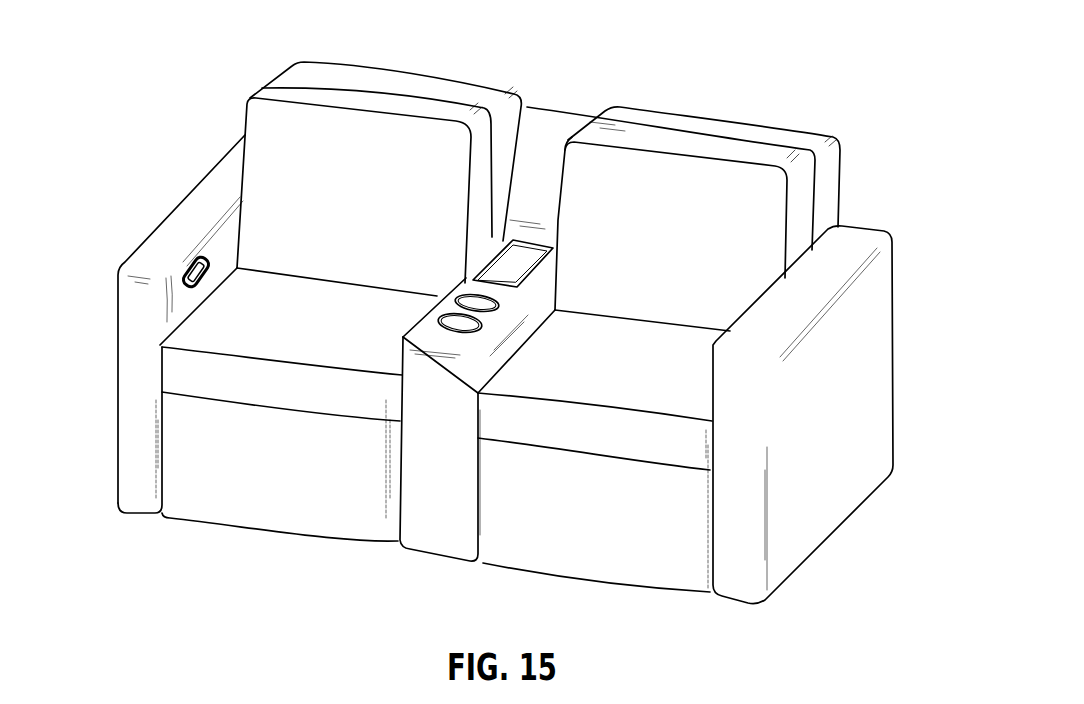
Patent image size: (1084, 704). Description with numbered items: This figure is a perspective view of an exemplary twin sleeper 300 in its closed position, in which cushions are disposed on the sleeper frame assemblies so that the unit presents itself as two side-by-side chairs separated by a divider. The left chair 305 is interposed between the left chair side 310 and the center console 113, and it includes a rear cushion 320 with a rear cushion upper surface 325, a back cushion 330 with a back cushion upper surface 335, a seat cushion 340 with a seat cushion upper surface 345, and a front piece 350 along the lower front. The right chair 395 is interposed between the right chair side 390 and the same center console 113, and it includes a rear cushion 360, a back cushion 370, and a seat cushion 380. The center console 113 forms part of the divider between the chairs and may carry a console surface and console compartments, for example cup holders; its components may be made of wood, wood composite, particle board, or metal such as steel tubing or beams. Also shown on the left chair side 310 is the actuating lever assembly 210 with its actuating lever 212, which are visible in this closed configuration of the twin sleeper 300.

The seating arrangement 300 is at (672, 36).
The left chair 305 is at (457, 67).
The right chair 395 is at (717, 110).
The left chair side 310 is at (203, 173).
The rear cushion 320 is at (297, 63).
The rear cushion upper surface 325 is at (417, 75).
The back cushion 330 is at (257, 84).
The back cushion upper surface 335 is at (280, 132).
The seat cushion 340 is at (178, 377).
The seat cushion upper surface 345 is at (230, 327).
The front piece 350 is at (193, 448).
The actuating lever assembly 210 is at (200, 262).
The actuating lever 212 is at (193, 266).
The center console 113 is at (440, 343).
The rear cushion 360 is at (836, 158).
The back cushion 370 is at (800, 207).
The seat cushion 380 is at (583, 393).
The right chair side 390 is at (877, 345).